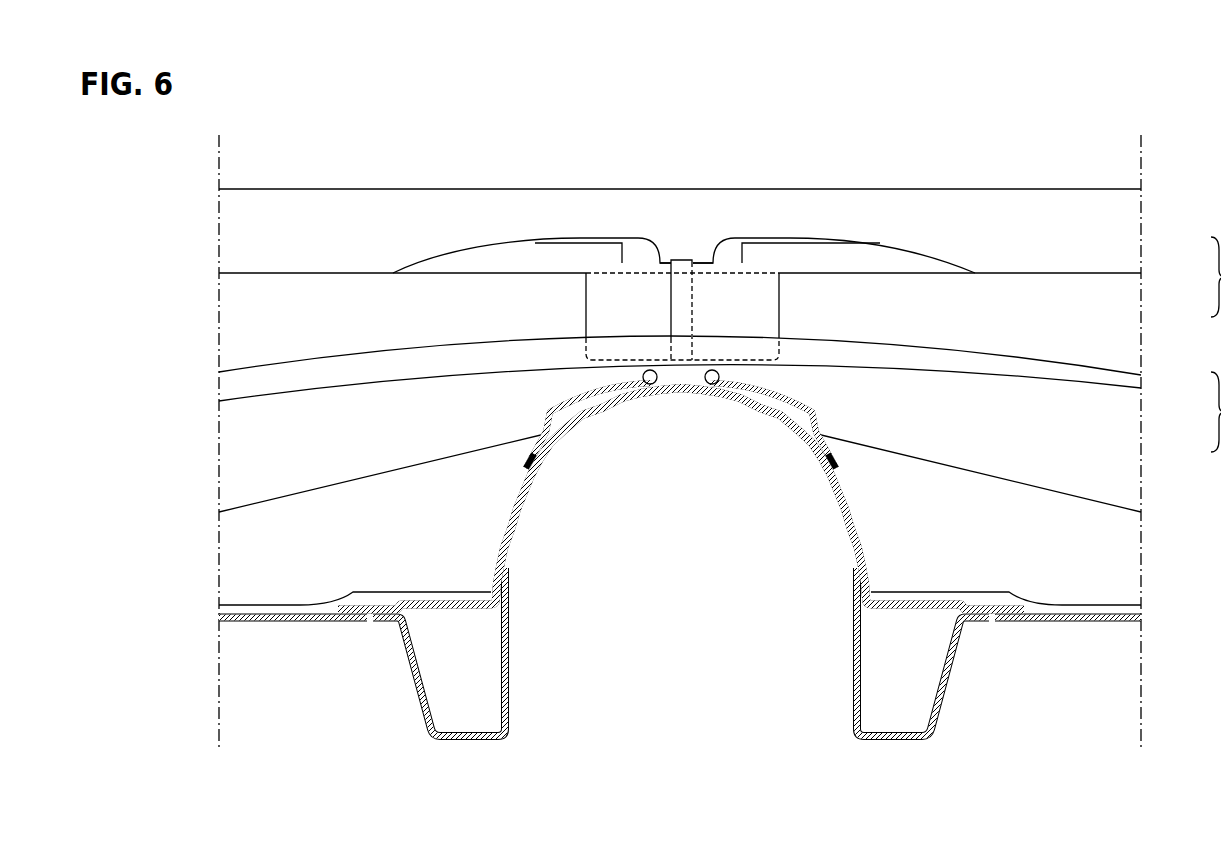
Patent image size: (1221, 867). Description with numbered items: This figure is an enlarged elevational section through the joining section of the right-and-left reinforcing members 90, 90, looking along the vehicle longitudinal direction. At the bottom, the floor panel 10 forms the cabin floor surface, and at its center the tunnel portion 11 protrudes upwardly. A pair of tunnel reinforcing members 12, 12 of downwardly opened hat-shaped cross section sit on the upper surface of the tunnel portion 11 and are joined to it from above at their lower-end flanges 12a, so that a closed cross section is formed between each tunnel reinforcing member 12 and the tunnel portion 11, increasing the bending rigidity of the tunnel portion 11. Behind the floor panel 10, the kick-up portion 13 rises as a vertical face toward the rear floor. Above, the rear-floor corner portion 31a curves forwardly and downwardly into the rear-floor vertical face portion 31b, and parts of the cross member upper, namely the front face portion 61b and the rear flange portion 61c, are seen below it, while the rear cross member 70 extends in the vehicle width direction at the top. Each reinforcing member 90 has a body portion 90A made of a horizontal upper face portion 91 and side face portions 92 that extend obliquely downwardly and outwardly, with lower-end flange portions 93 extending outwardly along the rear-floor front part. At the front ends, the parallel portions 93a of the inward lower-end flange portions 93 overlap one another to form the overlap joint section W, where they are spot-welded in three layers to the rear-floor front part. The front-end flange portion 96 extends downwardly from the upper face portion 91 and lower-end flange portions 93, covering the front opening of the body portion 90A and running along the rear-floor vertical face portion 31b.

The floor panel 10 is at (268, 623).
The tunnel portion 11 is at (833, 497).
The tunnel reinforcing member 12 is at (573, 402).
The lower-end flange 12a is at (524, 463).
The kick-up portion 13 is at (1113, 557).
The rear-floor corner portion 31a is at (1103, 273).
The rear-floor vertical face portion 31b is at (1115, 305).
The front face portion 61b is at (1115, 431).
The rear flange portion 61c is at (1115, 388).
The rear cross member 70 is at (300, 189).
The reinforcing member 90 is at (688, 230).
The body portion 90A is at (688, 230).
The upper face portion 91 is at (476, 250).
The side face portion 92 is at (462, 264).
The lower-end flange portion 93 is at (550, 267).
The parallel portion 93a is at (663, 263).
The front-end flange portion 96 is at (586, 298).
The overlap joint section W is at (675, 247).